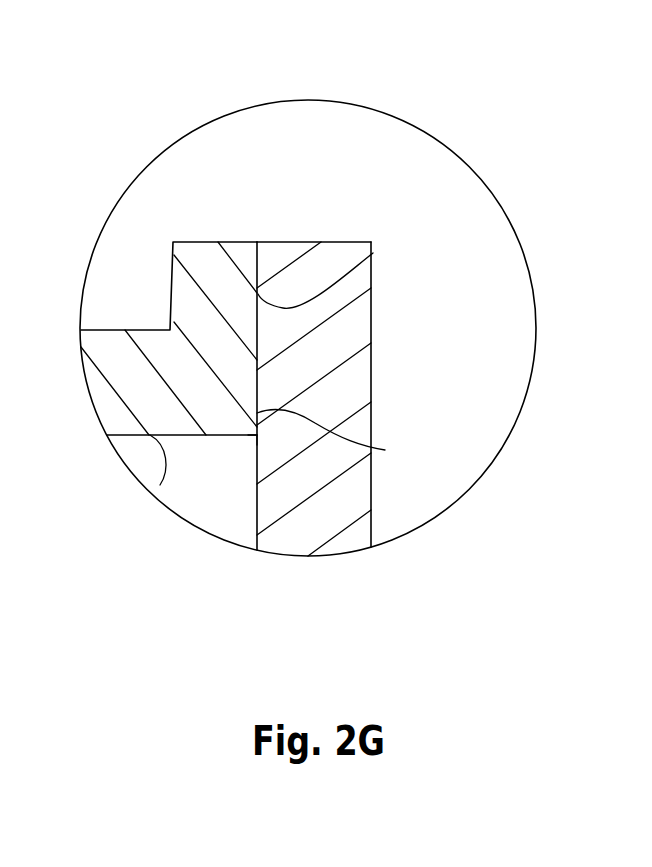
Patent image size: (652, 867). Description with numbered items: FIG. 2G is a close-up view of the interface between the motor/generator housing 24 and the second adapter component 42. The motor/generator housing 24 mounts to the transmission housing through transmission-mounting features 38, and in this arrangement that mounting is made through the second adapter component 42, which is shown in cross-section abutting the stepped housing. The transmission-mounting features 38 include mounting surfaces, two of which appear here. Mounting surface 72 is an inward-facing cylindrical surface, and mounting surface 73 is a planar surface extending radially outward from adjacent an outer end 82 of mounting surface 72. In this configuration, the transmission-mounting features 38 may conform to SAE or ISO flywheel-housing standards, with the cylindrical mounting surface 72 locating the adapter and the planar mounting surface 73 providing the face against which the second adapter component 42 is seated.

The motor/generator housing 24 is at (210, 263).
The second adapter component 42 is at (357, 324).
The mounting surface 73 is at (373, 252).
The transmission-mounting features 38 is at (385, 450).
The mounting surface 72 is at (160, 485).
The outer end 82 is at (253, 439).